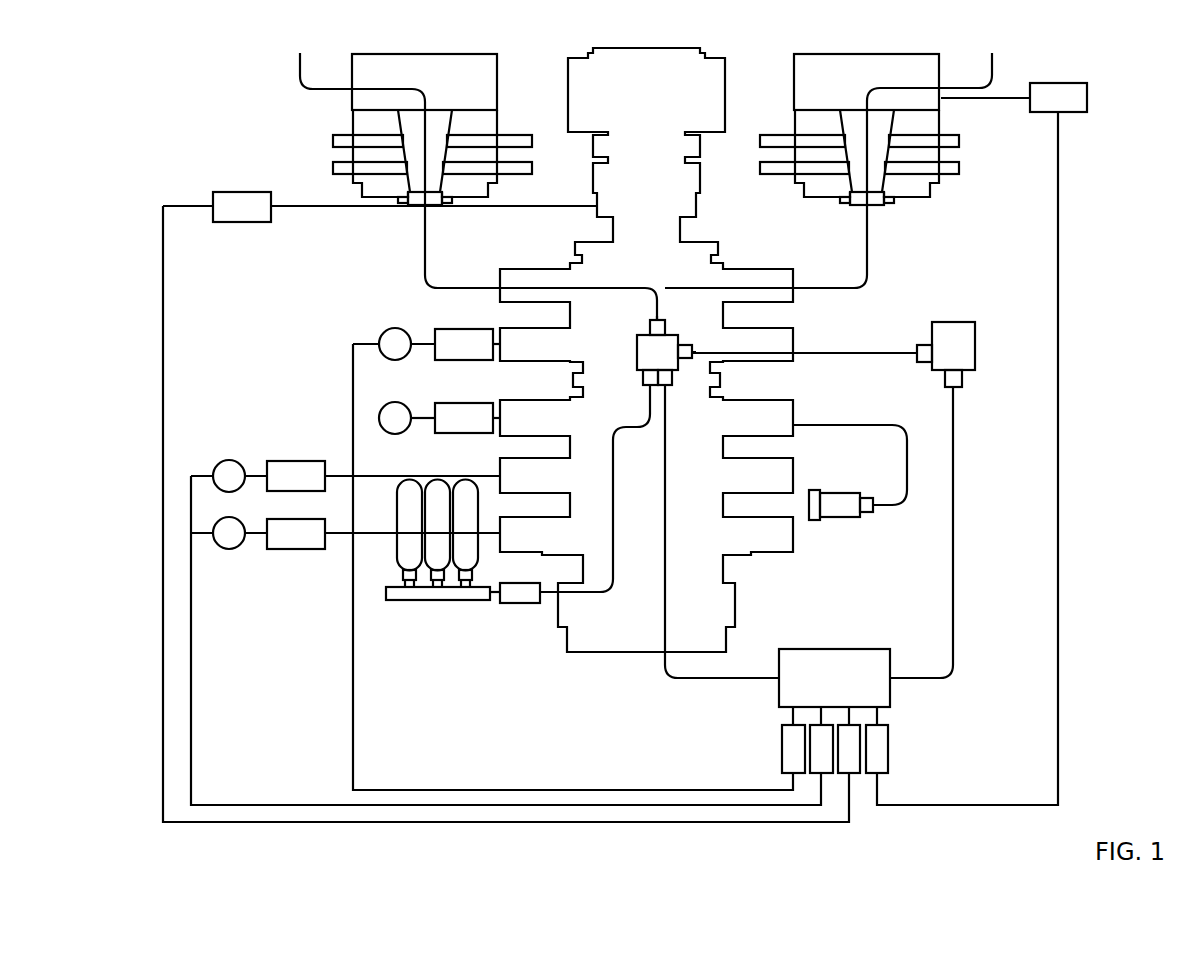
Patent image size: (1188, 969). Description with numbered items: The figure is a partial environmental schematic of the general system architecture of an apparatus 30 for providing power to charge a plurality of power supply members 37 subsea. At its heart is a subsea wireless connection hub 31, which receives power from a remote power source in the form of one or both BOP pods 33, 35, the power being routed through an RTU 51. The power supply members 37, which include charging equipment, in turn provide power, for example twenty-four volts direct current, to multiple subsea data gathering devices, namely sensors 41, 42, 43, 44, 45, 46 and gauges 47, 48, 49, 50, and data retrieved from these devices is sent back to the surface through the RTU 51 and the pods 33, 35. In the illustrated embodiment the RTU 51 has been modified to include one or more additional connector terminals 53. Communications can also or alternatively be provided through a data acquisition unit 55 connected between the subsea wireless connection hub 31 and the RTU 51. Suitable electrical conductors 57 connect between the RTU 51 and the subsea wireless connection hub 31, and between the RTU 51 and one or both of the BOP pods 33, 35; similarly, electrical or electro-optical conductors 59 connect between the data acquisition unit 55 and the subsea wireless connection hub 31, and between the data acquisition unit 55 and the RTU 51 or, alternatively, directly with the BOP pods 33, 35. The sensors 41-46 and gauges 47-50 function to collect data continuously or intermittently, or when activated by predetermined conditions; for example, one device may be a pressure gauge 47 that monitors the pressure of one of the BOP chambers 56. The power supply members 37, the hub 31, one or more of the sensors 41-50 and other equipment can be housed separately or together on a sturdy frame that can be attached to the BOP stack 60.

The apparatus 30 is at (183, 108).
The subsea wireless connection hub 31 is at (825, 649).
The BOP pod 33 is at (455, 83).
The BOP pod 35 is at (851, 83).
The power supply members 37 is at (915, 752).
The sensor 41 is at (448, 329).
The sensor 42 is at (456, 403).
The sensor 43 is at (290, 461).
The sensor 44 is at (292, 549).
The sensor 45 is at (232, 192).
The sensor 46 is at (1073, 83).
The pressure gauge 47 is at (383, 332).
The gauge 48 is at (381, 408).
The gauge 49 is at (222, 461).
The gauge 50 is at (232, 549).
The RTU 51 is at (637, 352).
The connector terminals 53 is at (672, 312).
The data acquisition unit 55 is at (950, 322).
The BOP chamber 56 is at (548, 367).
The electrical conductors 57 is at (425, 262).
The electrical or electro-optical conductors 59 is at (867, 350).
The BOP stack 60 is at (812, 408).